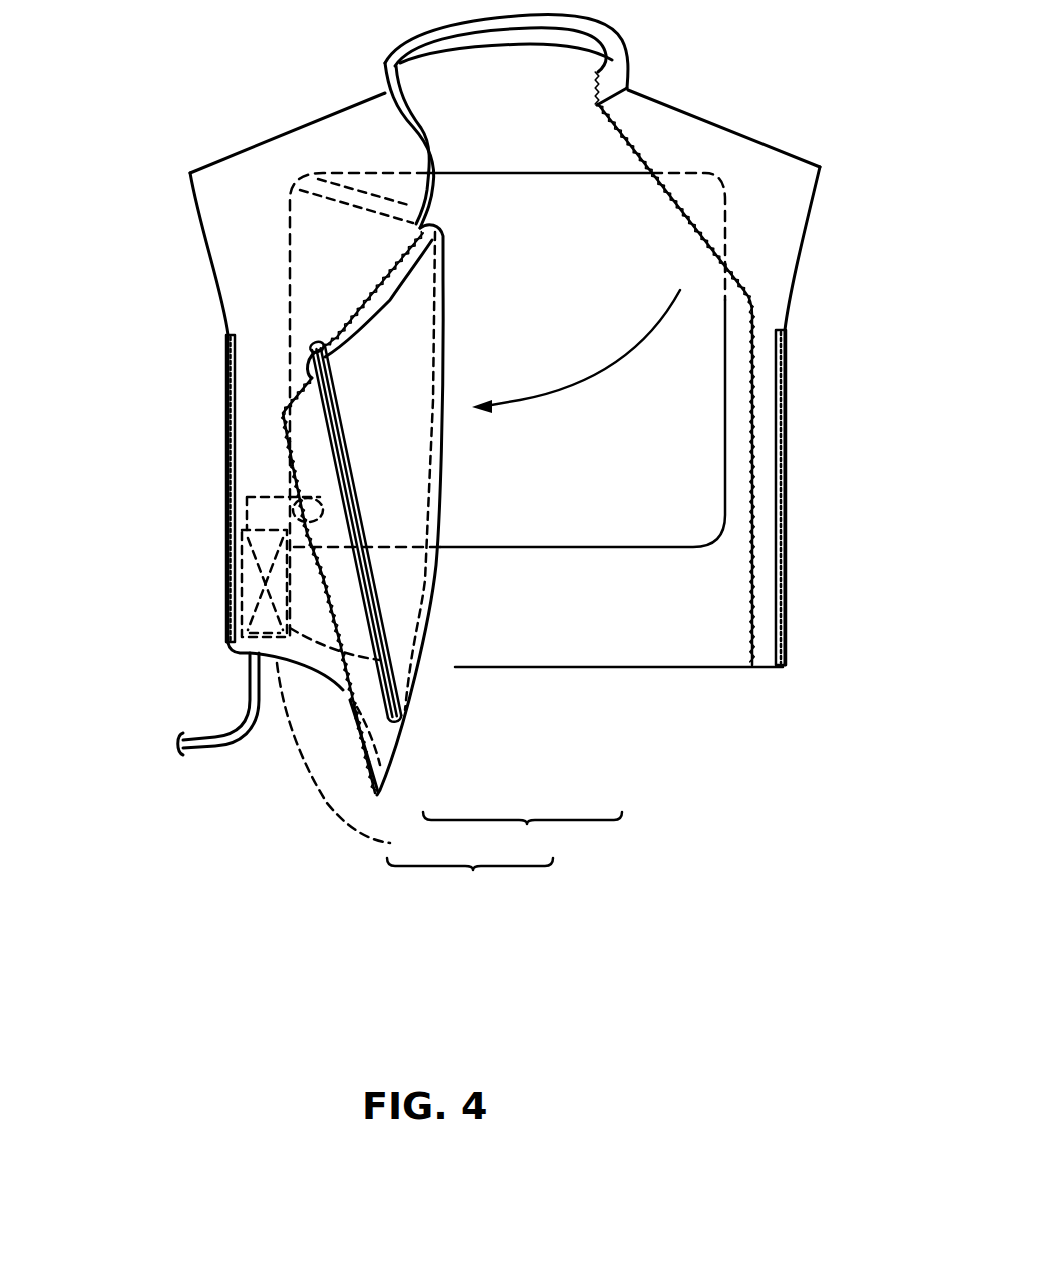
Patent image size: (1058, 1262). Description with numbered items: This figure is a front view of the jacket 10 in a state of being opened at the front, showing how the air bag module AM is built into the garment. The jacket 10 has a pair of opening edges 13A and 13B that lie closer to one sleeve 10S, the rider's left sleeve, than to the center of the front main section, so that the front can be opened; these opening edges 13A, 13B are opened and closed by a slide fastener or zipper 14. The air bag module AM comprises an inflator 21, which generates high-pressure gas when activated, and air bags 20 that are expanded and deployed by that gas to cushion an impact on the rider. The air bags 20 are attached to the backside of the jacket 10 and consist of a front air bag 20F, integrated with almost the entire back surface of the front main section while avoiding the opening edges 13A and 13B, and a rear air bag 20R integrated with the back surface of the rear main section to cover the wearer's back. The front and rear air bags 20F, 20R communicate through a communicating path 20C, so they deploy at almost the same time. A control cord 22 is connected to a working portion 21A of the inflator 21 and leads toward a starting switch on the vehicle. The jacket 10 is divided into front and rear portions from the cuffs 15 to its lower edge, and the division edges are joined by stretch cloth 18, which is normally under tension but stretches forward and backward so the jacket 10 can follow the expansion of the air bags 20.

The jacket 10 is at (284, 125).
The sleeve 10S is at (192, 175).
The cuffs 15 is at (192, 180).
The slide fastener or zipper 14 is at (655, 199).
The stretch cloth 18 is at (227, 428).
The opening edge 13A is at (343, 623).
The opening edge 13B is at (758, 473).
The communicating path 20C is at (335, 507).
The working portion 21A is at (227, 647).
The inflator 21 is at (359, 748).
The control cord 22 is at (213, 748).
The front air bag 20F is at (410, 647).
The rear air bag 20R is at (618, 530).
The air bags 20 is at (522, 840).
The air bag module AM is at (470, 888).